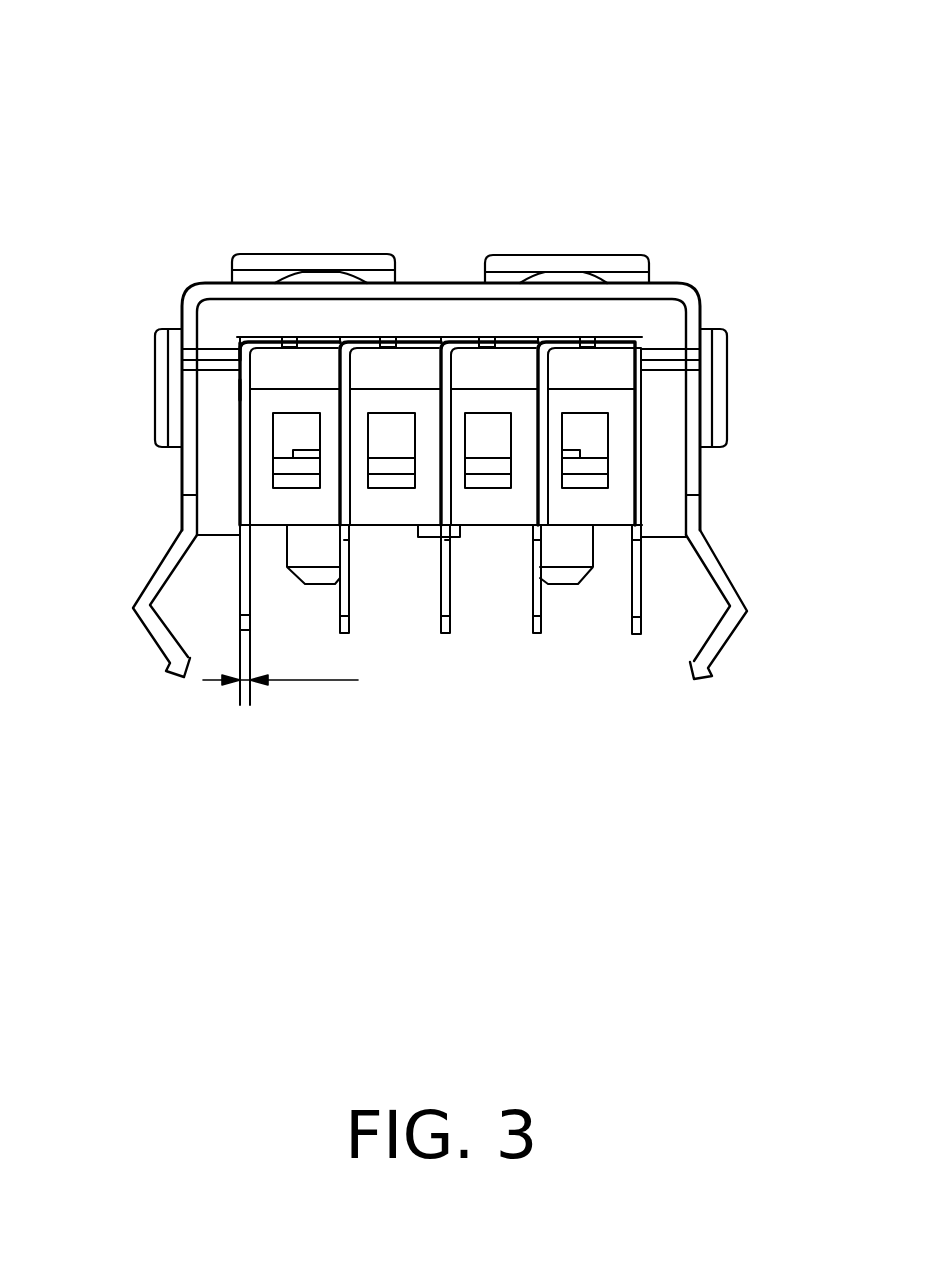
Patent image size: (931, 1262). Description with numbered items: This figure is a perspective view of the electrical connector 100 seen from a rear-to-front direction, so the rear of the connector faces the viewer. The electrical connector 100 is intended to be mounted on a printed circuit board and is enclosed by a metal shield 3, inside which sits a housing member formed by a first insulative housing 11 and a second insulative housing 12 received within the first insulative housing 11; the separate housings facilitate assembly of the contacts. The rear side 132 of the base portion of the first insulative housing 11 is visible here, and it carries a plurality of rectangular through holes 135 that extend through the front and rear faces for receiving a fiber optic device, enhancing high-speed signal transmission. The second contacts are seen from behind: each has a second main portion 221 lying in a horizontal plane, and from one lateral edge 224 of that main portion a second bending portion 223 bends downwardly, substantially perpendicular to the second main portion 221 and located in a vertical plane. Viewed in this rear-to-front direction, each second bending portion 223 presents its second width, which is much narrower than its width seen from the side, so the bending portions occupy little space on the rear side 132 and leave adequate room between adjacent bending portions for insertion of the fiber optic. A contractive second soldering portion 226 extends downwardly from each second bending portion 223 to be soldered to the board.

The electrical connector 100 is at (440, 38).
The metal shield 3 is at (443, 291).
The first insulative housing 11 is at (433, 401).
The second insulative housing 12 is at (596, 368).
The rear side 132 is at (620, 488).
The through holes 135 is at (292, 423).
The second main portion 221 is at (275, 342).
The second bending portion 223 is at (247, 387).
The lateral edge 224 is at (247, 352).
The second soldering portion 226 is at (245, 582).